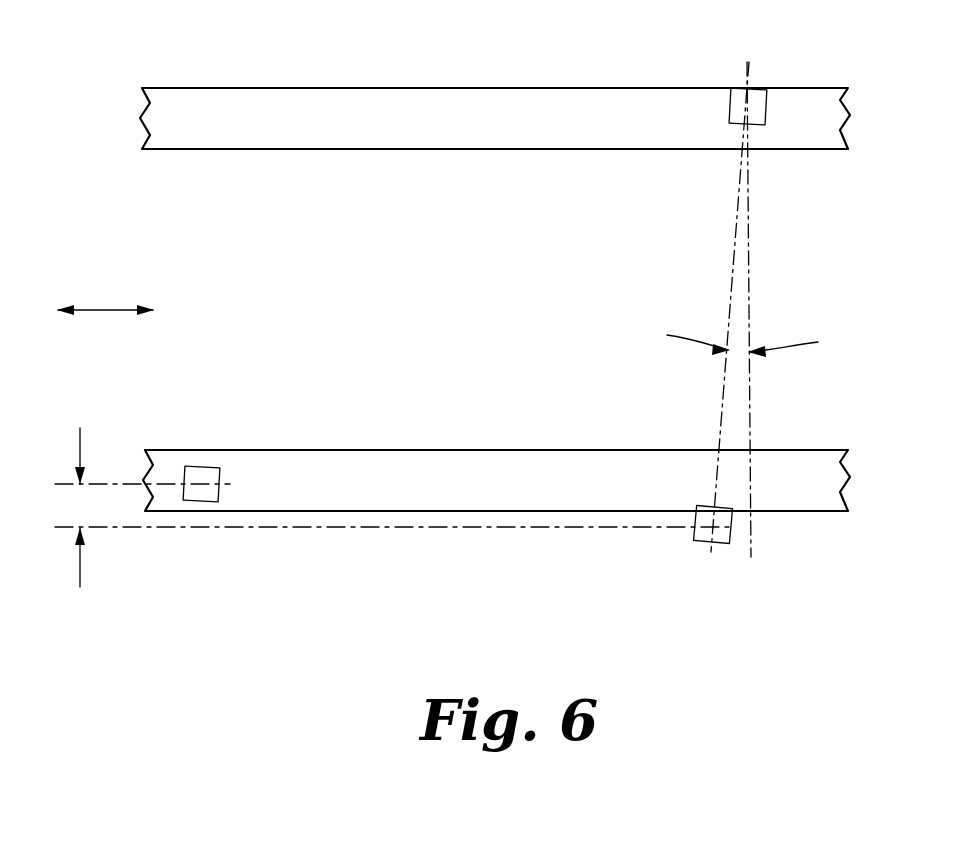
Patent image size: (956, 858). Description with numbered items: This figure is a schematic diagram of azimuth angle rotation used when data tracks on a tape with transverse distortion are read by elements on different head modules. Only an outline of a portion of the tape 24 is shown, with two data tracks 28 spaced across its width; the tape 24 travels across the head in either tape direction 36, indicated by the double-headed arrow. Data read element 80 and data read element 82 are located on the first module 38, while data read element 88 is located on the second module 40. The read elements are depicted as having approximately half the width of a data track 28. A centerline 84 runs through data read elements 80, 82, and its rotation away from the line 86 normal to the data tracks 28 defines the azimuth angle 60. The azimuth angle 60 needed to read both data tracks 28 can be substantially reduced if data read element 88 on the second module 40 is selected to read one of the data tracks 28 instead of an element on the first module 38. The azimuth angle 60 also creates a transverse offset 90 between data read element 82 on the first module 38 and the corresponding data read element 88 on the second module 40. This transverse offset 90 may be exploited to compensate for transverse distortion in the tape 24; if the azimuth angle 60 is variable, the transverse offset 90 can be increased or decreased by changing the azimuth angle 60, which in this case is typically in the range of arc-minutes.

The tape 24 is at (298, 450).
The data tracks 28 is at (280, 150).
The tape direction 36 is at (105, 310).
The first module 38 is at (705, 584).
The second module 40 is at (208, 540).
The azimuth angle 60 is at (692, 343).
The data read element 80 is at (731, 110).
The data read element 82 is at (693, 533).
The centerline 84 is at (737, 257).
The line normal to data tracks 86 is at (748, 250).
The data read element 88 is at (205, 467).
The transverse offset 90 is at (80, 568).